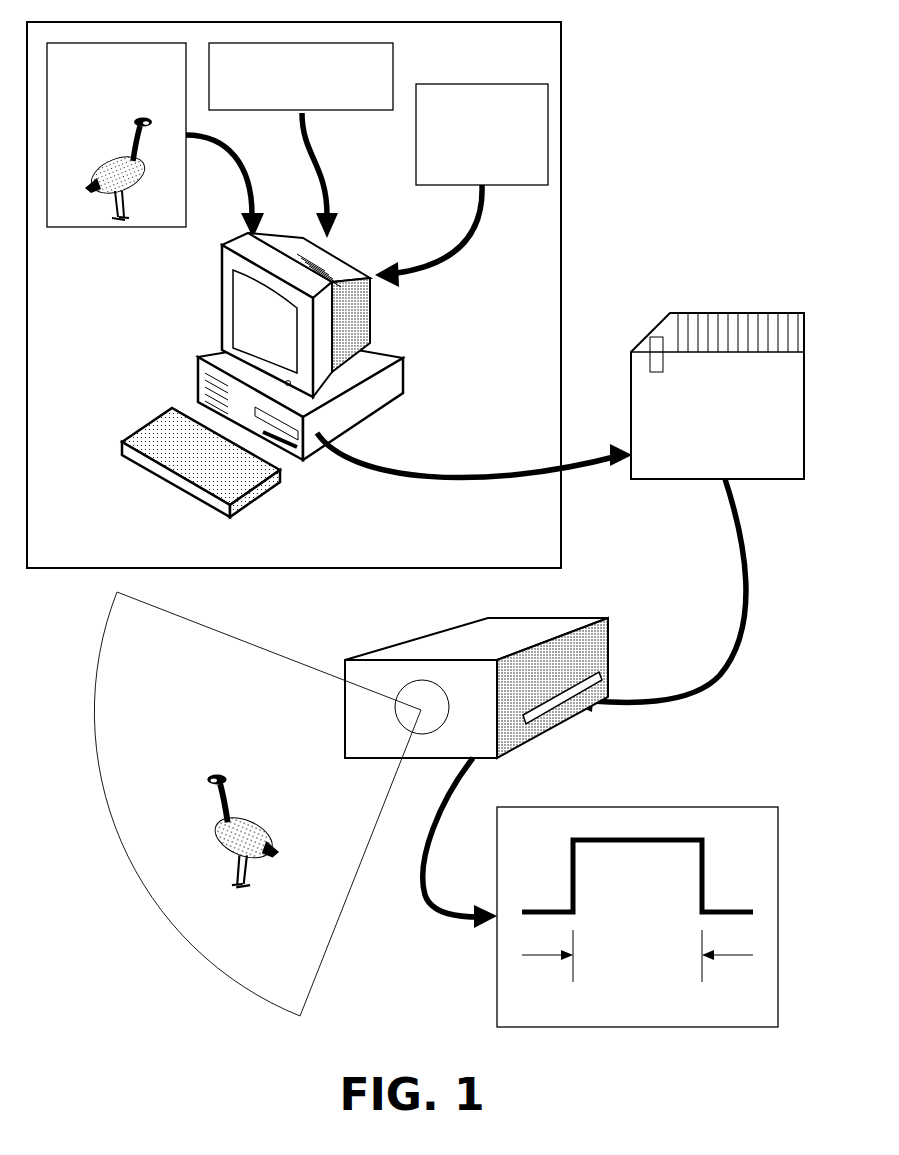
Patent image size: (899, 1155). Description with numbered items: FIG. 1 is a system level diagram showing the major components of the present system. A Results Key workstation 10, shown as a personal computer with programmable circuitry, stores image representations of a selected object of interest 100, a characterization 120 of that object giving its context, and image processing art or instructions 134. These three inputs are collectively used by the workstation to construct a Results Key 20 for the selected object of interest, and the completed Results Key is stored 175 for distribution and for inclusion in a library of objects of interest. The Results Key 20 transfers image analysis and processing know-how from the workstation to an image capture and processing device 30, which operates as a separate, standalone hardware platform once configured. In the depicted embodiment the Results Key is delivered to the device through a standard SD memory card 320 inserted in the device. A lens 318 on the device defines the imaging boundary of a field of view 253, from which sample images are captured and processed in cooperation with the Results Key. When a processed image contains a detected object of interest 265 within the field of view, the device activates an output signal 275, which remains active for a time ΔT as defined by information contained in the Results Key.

The Results Key workstation 10 is at (580, 120).
The Results Key 20 is at (710, 296).
The image capture and processing device 30 is at (480, 657).
The selected object of interest 100 is at (83, 227).
The characterization 120 is at (393, 70).
The image processing art 134 is at (523, 185).
The store 175 is at (365, 398).
The field of view 253 is at (214, 642).
The detected object of interest 265 is at (270, 872).
The output signal 275 is at (497, 965).
The lens 318 is at (390, 738).
The SD memory card 320 is at (537, 712).